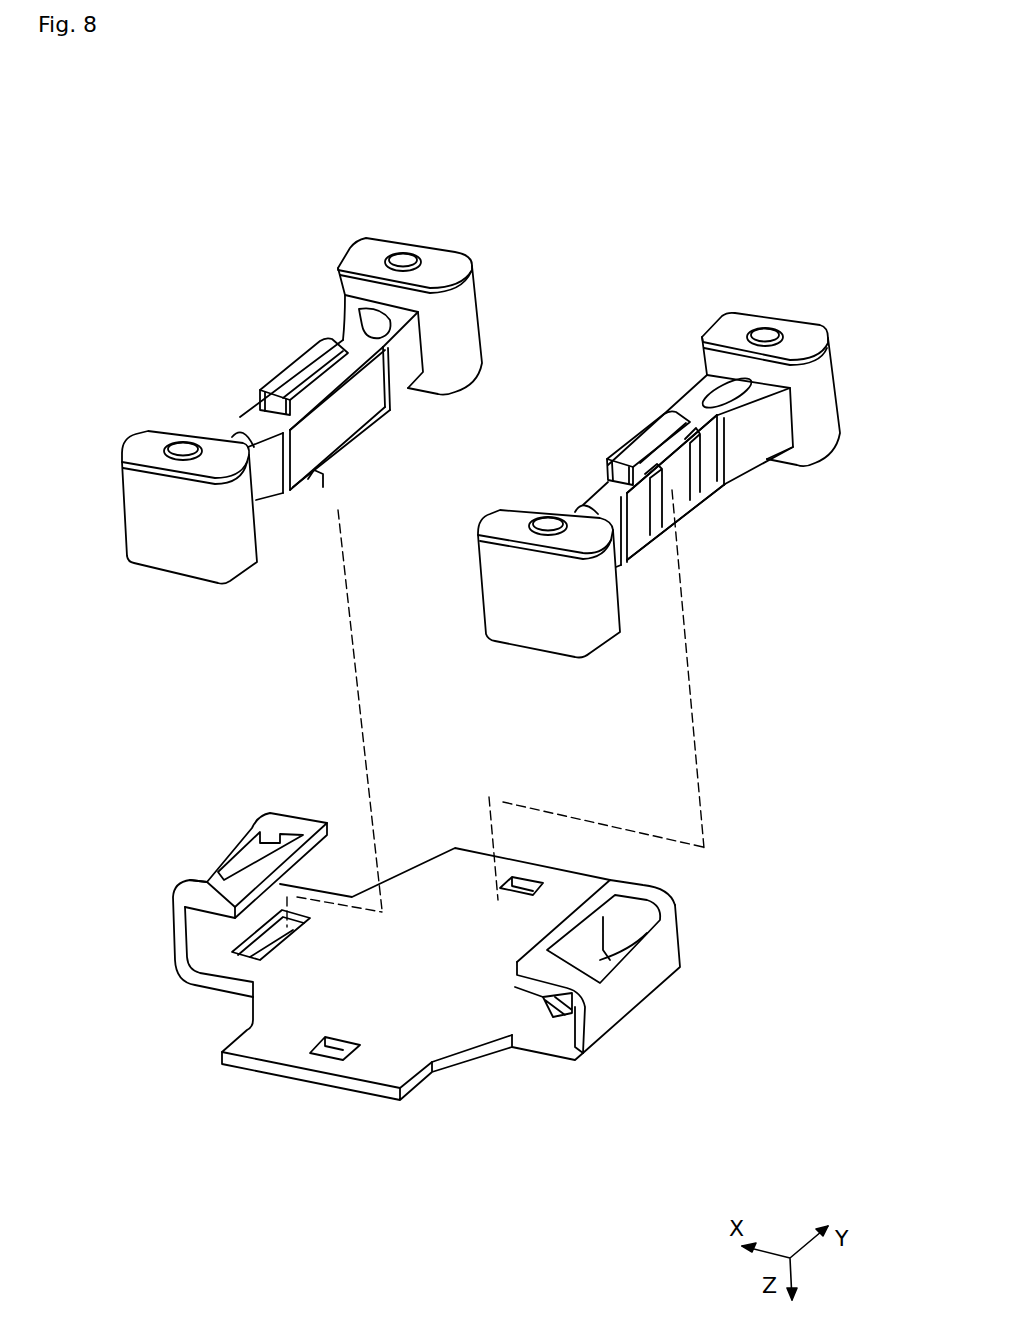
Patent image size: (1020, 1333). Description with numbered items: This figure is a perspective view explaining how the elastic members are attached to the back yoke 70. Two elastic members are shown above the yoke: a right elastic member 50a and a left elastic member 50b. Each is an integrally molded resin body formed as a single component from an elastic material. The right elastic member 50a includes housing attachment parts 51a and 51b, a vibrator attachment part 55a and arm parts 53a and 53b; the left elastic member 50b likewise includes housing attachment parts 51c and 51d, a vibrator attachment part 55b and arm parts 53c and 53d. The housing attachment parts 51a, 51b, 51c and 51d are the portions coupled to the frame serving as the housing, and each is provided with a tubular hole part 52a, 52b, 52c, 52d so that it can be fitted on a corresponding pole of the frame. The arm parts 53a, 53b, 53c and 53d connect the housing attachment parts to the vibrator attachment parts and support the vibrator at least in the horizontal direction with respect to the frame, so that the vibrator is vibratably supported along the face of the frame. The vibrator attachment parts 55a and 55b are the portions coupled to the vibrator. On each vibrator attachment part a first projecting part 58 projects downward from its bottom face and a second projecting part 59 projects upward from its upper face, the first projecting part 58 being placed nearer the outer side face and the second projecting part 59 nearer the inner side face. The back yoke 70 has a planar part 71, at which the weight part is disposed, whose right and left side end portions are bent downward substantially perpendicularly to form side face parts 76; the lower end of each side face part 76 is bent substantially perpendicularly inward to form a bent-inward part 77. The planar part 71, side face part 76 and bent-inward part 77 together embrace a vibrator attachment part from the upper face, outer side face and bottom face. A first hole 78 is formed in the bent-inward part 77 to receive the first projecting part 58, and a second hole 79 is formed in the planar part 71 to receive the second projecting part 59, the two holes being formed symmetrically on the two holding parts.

The right elastic member 50a is at (316, 250).
The left elastic member 50b is at (688, 283).
The housing attachment part 51a is at (443, 262).
The housing attachment part 51b is at (150, 447).
The housing attachment part 51c is at (512, 523).
The housing attachment part 51d is at (752, 320).
The hole part 52a is at (405, 262).
The hole part 52b is at (182, 448).
The hole part 52c is at (547, 527).
The hole part 52d is at (775, 338).
The arm part 53a is at (355, 302).
The arm part 53b is at (232, 432).
The arm part 53c is at (567, 502).
The arm part 53d is at (710, 375).
The vibrator attachment part 55a is at (357, 423).
The vibrator attachment part 55b is at (692, 503).
The first projecting part 58 is at (288, 377).
The second projecting part 59 is at (328, 484).
The back yoke 70 is at (413, 895).
The planar part 71 is at (397, 973).
The side face part 76 is at (173, 935).
The bent-inward part 77 is at (297, 825).
The first hole 78 is at (248, 847).
The second hole 79 is at (237, 943).